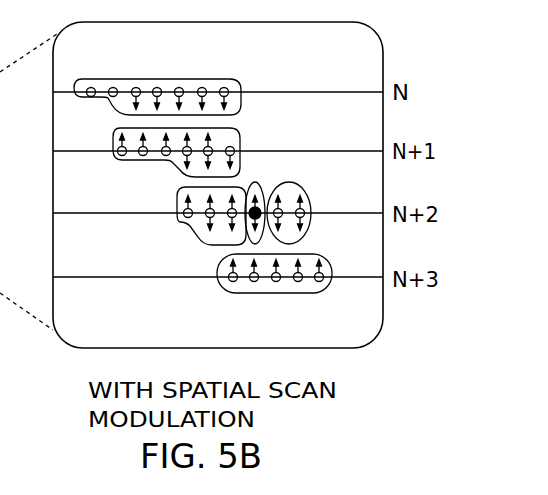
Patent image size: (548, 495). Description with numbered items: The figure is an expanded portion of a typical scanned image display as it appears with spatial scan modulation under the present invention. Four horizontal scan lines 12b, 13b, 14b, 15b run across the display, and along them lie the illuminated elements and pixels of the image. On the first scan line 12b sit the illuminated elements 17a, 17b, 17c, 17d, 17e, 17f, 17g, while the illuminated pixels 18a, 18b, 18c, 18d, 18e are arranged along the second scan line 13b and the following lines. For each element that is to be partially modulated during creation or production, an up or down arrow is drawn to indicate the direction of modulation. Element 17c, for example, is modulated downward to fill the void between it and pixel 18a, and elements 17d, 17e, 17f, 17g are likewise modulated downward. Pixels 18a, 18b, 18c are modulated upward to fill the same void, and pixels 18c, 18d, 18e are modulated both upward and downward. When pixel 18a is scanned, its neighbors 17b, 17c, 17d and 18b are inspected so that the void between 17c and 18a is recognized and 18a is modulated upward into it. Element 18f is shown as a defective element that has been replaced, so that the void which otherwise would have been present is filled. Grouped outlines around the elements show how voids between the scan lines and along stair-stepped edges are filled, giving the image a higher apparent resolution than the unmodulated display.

The scan line 12b is at (60, 93).
The scan line 13b is at (60, 151).
The scan line 14b is at (60, 213).
The scan line 15b is at (60, 277).
The illuminated element 17a is at (88, 88).
The illuminated element 17b is at (113, 86).
The illuminated element 17c is at (152, 70).
The illuminated element 17d is at (157, 85).
The illuminated element 17e is at (210, 68).
The illuminated element 17f is at (204, 85).
The illuminated element 17g is at (227, 86).
The illuminated pixel 18a is at (119, 146).
The illuminated pixel 18b is at (142, 158).
The illuminated pixel 18c is at (167, 158).
The illuminated pixel 18d is at (189, 145).
The illuminated pixel 18e is at (234, 146).
The defective element 18f is at (258, 206).